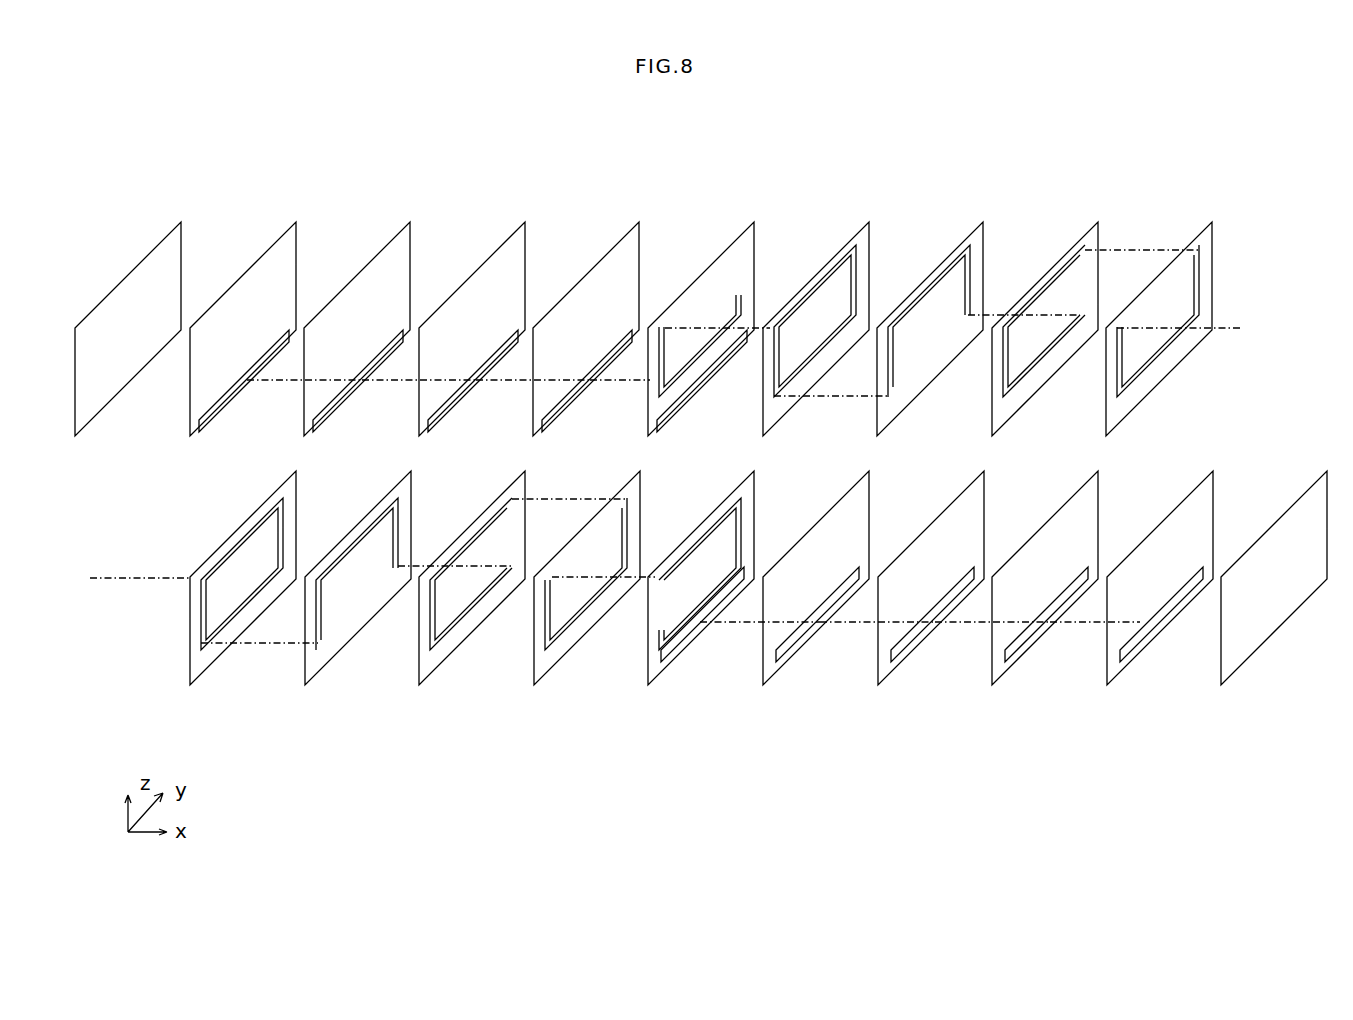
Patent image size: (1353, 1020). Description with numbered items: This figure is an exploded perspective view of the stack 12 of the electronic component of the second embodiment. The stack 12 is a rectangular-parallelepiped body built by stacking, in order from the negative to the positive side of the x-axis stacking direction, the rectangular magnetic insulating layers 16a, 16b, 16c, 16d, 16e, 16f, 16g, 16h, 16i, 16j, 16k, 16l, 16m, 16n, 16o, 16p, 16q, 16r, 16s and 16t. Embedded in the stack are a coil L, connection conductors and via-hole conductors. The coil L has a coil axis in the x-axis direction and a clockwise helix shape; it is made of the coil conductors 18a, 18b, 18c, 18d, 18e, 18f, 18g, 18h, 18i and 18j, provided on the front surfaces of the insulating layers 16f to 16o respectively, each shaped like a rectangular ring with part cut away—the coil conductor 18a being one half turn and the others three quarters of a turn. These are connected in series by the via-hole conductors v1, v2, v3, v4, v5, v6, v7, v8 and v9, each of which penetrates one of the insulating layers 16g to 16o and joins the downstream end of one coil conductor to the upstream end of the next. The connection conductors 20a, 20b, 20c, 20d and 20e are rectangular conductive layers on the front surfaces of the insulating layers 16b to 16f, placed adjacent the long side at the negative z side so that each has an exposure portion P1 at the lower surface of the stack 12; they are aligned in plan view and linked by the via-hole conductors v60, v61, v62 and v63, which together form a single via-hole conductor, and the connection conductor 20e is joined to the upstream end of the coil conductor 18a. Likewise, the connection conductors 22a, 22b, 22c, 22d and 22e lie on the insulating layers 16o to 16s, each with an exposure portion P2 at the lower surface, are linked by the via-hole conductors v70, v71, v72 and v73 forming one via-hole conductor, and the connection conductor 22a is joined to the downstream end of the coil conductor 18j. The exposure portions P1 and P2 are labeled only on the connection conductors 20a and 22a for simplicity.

The stack 12 is at (185, 143).
The insulating layer 16a is at (182, 221).
The insulating layer 16b is at (297, 221).
The insulating layer 16c is at (411, 221).
The insulating layer 16d is at (526, 221).
The insulating layer 16e is at (640, 221).
The insulating layer 16f is at (755, 221).
The insulating layer 16g is at (870, 221).
The insulating layer 16h is at (984, 221).
The insulating layer 16i is at (1099, 221).
The insulating layer 16j is at (1213, 221).
The insulating layer 16k is at (190, 686).
The insulating layer 16l is at (305, 686).
The insulating layer 16m is at (419, 686).
The insulating layer 16n is at (534, 686).
The insulating layer 16o is at (648, 686).
The insulating layer 16p is at (763, 686).
The insulating layer 16q is at (878, 686).
The insulating layer 16r is at (992, 686).
The insulating layer 16s is at (1107, 686).
The insulating layer 16t is at (1221, 686).
The coil conductor 18a is at (717, 350).
The coil conductor 18b is at (810, 296).
The coil conductor 18c is at (933, 291).
The coil conductor 18d is at (1062, 342).
The coil conductor 18e is at (1176, 342).
The coil conductor 18f is at (248, 540).
The coil conductor 18g is at (362, 538).
The coil conductor 18h is at (479, 602).
The coil conductor 18i is at (594, 602).
The coil conductor 18j is at (742, 514).
The connection conductor 20a is at (240, 392).
The connection conductor 20b is at (354, 392).
The connection conductor 20c is at (469, 392).
The connection conductor 20d is at (583, 392).
The connection conductor 20e is at (698, 392).
The connection conductor 22a is at (697, 628).
The connection conductor 22b is at (812, 628).
The connection conductor 22c is at (927, 628).
The connection conductor 22d is at (1041, 628).
The connection conductor 22e is at (1156, 628).
The via-hole conductor v1 is at (693, 328).
The via-hole conductor v2 is at (835, 398).
The via-hole conductor v3 is at (1048, 316).
The via-hole conductor v4 is at (1148, 253).
The via-hole conductor v5 is at (1236, 330).
The via-hole conductor v6 is at (267, 645).
The via-hole conductor v7 is at (478, 566).
The via-hole conductor v8 is at (565, 500).
The via-hole conductor v9 is at (574, 577).
The via-hole conductor v60 is at (275, 382).
The via-hole conductor v61 is at (389, 382).
The via-hole conductor v62 is at (504, 382).
The via-hole conductor v63 is at (618, 382).
The via-hole conductor v70 is at (733, 624).
The via-hole conductor v71 is at (848, 624).
The via-hole conductor v72 is at (963, 624).
The via-hole conductor v73 is at (1077, 624).
The exposure portion P1 is at (211, 424).
The exposure portion P2 is at (666, 664).
The coil L is at (946, 227).